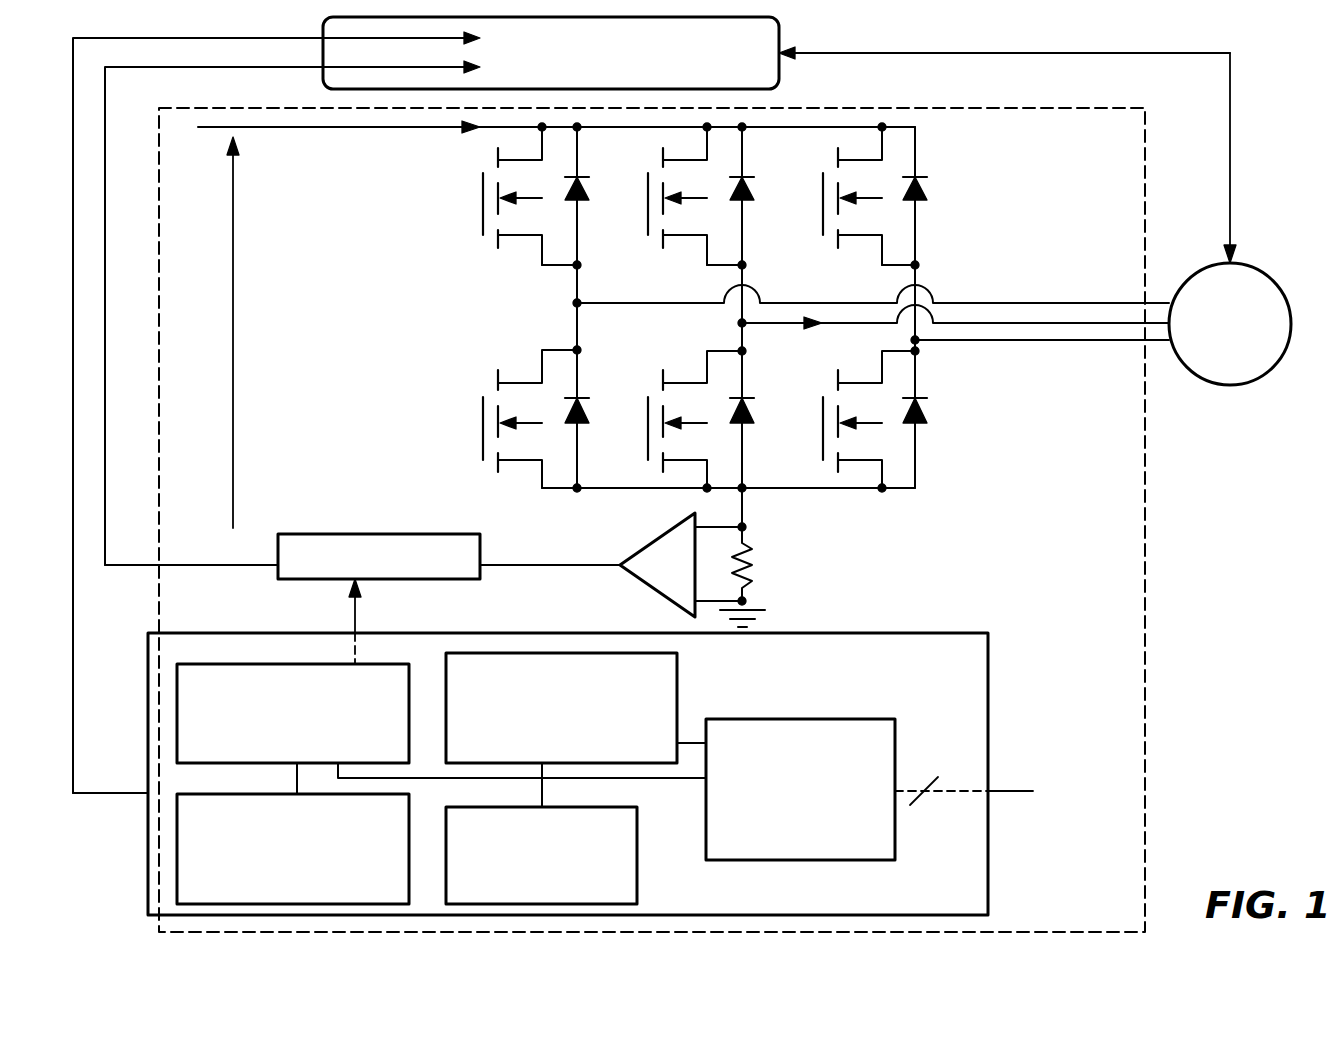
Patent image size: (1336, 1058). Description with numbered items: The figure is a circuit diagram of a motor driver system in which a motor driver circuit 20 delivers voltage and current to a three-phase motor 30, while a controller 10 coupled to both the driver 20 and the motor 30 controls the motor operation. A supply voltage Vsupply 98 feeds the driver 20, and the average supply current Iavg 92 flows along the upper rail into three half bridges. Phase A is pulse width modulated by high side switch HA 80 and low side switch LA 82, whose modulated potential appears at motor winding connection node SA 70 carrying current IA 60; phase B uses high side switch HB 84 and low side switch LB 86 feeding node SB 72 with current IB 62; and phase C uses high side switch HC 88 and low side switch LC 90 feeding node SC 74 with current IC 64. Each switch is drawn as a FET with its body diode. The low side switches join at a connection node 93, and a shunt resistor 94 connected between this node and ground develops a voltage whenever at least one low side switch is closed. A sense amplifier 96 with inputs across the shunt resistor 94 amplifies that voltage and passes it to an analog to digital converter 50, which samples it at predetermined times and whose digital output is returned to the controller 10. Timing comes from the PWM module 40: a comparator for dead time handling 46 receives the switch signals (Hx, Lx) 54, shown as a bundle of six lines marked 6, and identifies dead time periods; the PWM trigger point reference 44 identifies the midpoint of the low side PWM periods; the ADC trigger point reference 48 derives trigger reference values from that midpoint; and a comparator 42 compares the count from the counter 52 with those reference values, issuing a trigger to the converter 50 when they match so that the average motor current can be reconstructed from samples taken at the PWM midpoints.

The controller 10 is at (551, 53).
The motor driver circuit 20 is at (652, 520).
The motor 30 is at (1230, 219).
The PWM module 40 is at (568, 774).
The comparator 42 is at (293, 713).
The PWM trigger point reference 44 is at (561, 708).
The comparator for dead time handling 46 is at (616, 789).
The ADC trigger point reference 48 is at (293, 833).
The analog to digital converter 50 is at (292, 599).
The counter 52 is at (541, 833).
The switch signals (Hx, Lx) 54 is at (1010, 794).
The six switch signal lines 6 is at (924, 776).
The current IA 60 is at (640, 278).
The current IB 62 is at (806, 355).
The current IC 64 is at (1045, 400).
The motor winding connection node SA 70 is at (494, 328).
The motor winding connection node SB 72 is at (659, 328).
The motor winding connection node SC 74 is at (938, 400).
The high side switch HA 80 is at (452, 232).
The low side switch LA 82 is at (452, 456).
The high side switch HB 84 is at (617, 232).
The low side switch LB 86 is at (617, 456).
The high side switch HC 88 is at (792, 232).
The low side switch LC 90 is at (792, 456).
The average supply current Iavg 92 is at (556, 143).
The connection node 93 is at (745, 492).
The shunt resistor 94 is at (750, 604).
The sense amplifier 96 is at (640, 595).
The supply voltage Vsupply 98 is at (266, 332).